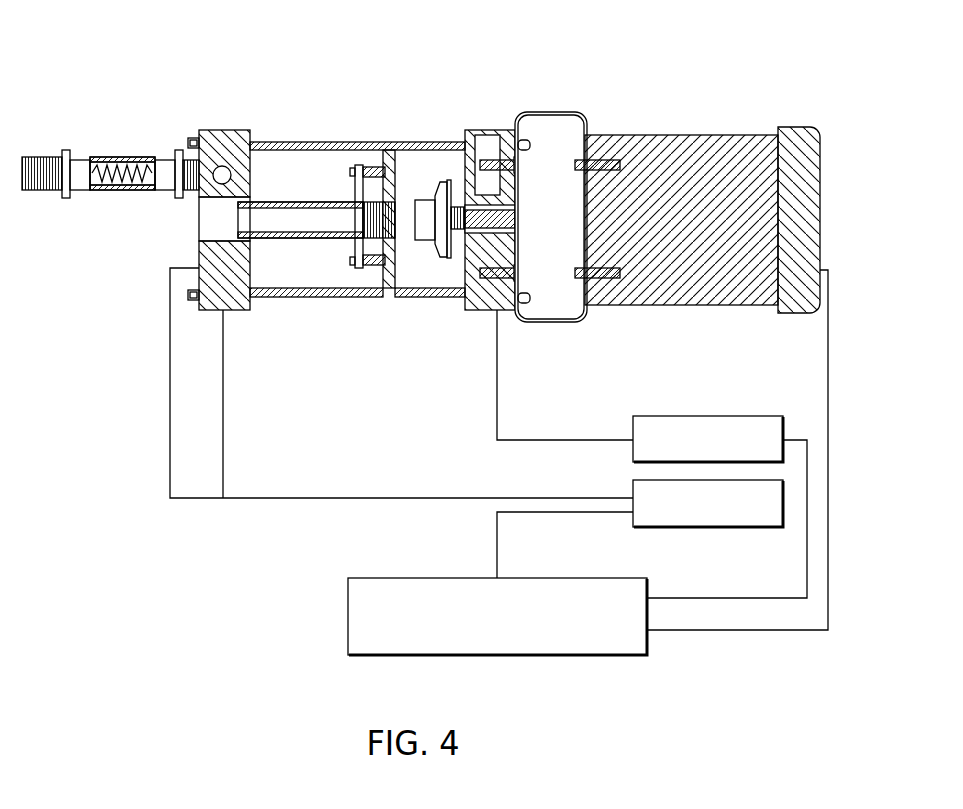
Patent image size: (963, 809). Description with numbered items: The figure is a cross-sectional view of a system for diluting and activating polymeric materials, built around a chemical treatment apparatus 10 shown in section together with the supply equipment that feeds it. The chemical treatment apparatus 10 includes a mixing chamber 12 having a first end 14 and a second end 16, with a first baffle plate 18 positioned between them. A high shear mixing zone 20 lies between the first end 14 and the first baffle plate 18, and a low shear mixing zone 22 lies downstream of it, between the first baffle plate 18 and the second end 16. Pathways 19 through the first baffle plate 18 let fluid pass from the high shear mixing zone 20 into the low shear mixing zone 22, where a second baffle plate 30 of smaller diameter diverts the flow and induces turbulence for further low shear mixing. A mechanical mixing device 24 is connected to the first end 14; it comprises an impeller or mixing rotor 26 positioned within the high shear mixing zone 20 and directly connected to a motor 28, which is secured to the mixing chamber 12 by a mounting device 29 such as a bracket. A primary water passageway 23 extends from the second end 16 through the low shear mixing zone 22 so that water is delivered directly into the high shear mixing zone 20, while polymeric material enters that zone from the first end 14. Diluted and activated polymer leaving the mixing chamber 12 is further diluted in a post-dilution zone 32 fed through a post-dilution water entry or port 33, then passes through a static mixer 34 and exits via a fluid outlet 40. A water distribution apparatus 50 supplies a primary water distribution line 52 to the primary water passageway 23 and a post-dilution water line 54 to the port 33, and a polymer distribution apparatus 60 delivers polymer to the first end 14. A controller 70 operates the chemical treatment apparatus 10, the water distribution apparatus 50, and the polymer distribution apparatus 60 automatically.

The chemical treatment apparatus 10 is at (162, 94).
The mixing chamber 12 is at (305, 142).
The first end 14 is at (468, 130).
The second end 16 is at (252, 302).
The first baffle plate 18 is at (408, 142).
The pathways 19 is at (402, 260).
The high shear mixing zone 20 is at (406, 192).
The low shear mixing zone 22 is at (288, 187).
The primary water passageway 23 is at (250, 219).
The mechanical mixing device 24 is at (672, 313).
The impeller or mixing rotor 26 is at (450, 262).
The motor 28 is at (700, 135).
The mounting device 29 is at (560, 112).
The second baffle plate 30 is at (353, 266).
The post-dilution zone 32 is at (225, 130).
The post-dilution water entry or port 33 is at (213, 130).
The static mixer 34 is at (116, 192).
The fluid outlet 40 is at (50, 152).
The water distribution apparatus 50 is at (696, 516).
The primary water distribution line 52 is at (170, 414).
The post-dilution water line 54 is at (223, 443).
The polymer distribution apparatus 60 is at (696, 452).
The controller 70 is at (485, 627).